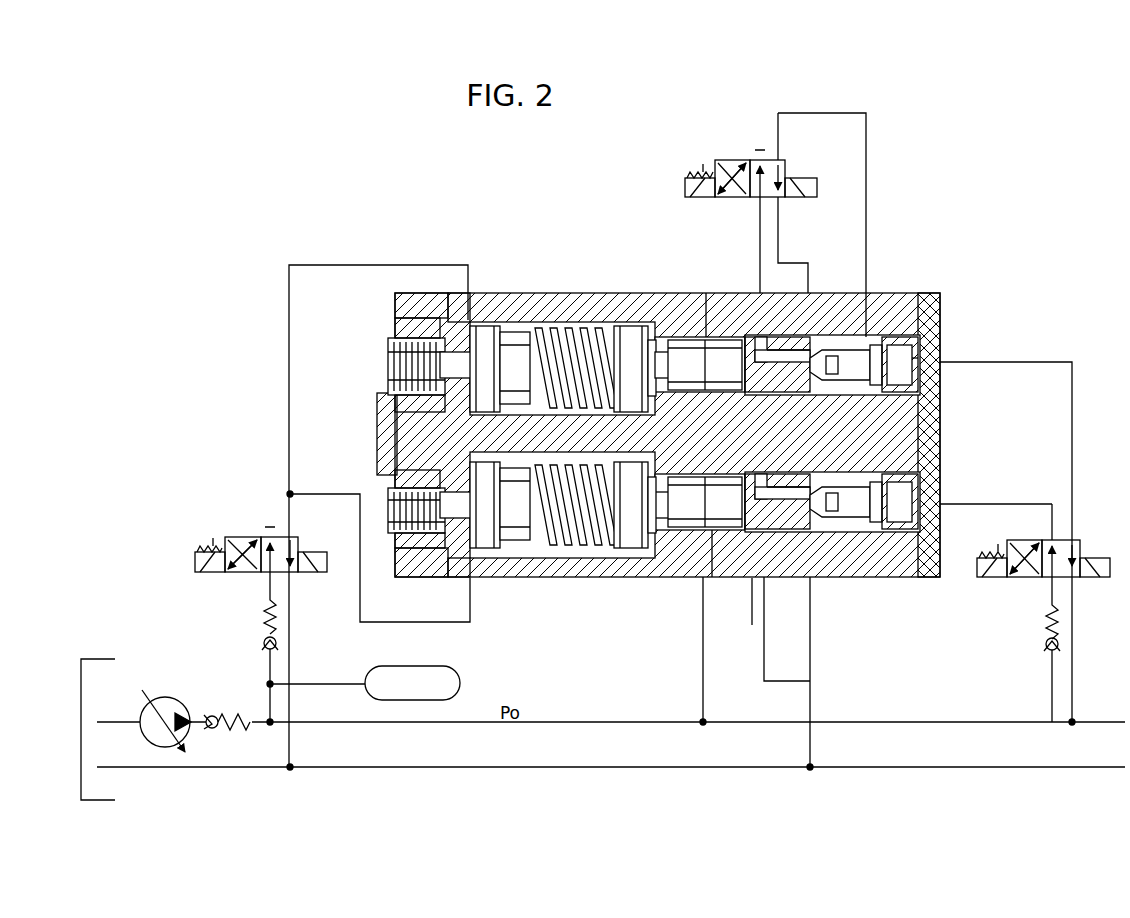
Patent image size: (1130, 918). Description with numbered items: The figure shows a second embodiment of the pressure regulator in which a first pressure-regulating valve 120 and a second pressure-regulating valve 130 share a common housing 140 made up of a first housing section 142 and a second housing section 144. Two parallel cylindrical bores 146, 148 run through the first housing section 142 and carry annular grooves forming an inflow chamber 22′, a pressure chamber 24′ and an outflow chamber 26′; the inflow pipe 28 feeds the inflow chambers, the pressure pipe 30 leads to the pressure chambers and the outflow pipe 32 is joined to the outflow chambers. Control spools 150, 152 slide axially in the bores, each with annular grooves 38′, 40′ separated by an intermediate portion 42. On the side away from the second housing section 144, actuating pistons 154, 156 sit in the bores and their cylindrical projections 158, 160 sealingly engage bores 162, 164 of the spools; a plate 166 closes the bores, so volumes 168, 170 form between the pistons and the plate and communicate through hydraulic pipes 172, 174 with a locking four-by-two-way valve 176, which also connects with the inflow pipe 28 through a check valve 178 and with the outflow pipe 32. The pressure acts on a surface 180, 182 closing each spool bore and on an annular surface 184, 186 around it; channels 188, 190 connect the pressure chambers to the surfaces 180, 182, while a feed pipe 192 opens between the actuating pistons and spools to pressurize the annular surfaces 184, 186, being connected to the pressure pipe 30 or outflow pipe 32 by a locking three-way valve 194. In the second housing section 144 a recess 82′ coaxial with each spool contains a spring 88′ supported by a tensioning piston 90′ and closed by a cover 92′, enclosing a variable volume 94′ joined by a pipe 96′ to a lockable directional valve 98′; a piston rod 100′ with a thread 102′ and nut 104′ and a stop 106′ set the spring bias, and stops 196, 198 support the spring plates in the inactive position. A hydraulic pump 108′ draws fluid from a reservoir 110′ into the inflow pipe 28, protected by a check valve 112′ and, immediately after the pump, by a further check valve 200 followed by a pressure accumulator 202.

The inflow chamber 22′ is at (706, 292).
The pressure chamber 24′ is at (750, 292).
The outflow chamber 26′ is at (820, 293).
The inflow pipe 28 is at (107, 720).
The pressure pipe 30 is at (770, 681).
The outflow pipe 32 is at (713, 768).
The annular groove 38′ is at (709, 371).
The annular groove 40′ is at (785, 292).
The intermediate portion 42 is at (742, 391).
The recess 82′ is at (618, 322).
The spring 88′ is at (580, 322).
The tensioning piston 90′ is at (493, 322).
The cover 92′ is at (425, 300).
The volume 94′ is at (462, 312).
The pipe 96′ is at (289, 327).
The directional valve 98′ is at (243, 534).
The piston rod 100′ is at (384, 353).
The thread 102′ is at (438, 322).
The nut 104′ is at (405, 338).
The stop 106′ is at (380, 430).
The hydraulic pump 108′ is at (164, 697).
The reservoir 110′ is at (96, 659).
The check valve 112′ is at (263, 643).
The first pressure-regulating valve 120 is at (547, 290).
The second pressure-regulating valve 130 is at (566, 590).
The common housing 140 is at (585, 290).
The first housing section 142 is at (697, 291).
The second housing section 144 is at (505, 292).
The cylindrical bore 146 is at (670, 338).
The cylindrical bore 148 is at (678, 578).
The control spool 150 is at (678, 335).
The control spool 152 is at (664, 578).
The actuating piston 154 is at (905, 292).
The actuating piston 156 is at (898, 578).
The cylindrical projection 158 is at (842, 392).
The cylindrical projection 160 is at (833, 495).
The bore 162 is at (842, 292).
The bore 164 is at (848, 578).
The plate 166 is at (940, 296).
The volume 168 is at (915, 356).
The volume 170 is at (940, 522).
The hydraulic pipe 172 is at (1006, 542).
The hydraulic pipe 174 is at (990, 504).
The 4/2-way valve 176 is at (1024, 580).
The check valve 178 is at (1045, 645).
The surface 180 is at (768, 392).
The surface 182 is at (790, 474).
The annular surface 184 is at (870, 292).
The annular surface 186 is at (866, 578).
The channel 188 is at (773, 292).
The channel 190 is at (743, 610).
The feed pipe 192 is at (866, 172).
The three-way valve 194 is at (733, 157).
The stop 196 is at (650, 338).
The stop 198 is at (640, 578).
The check valve 200 is at (212, 715).
The pressure accumulator 202 is at (398, 694).